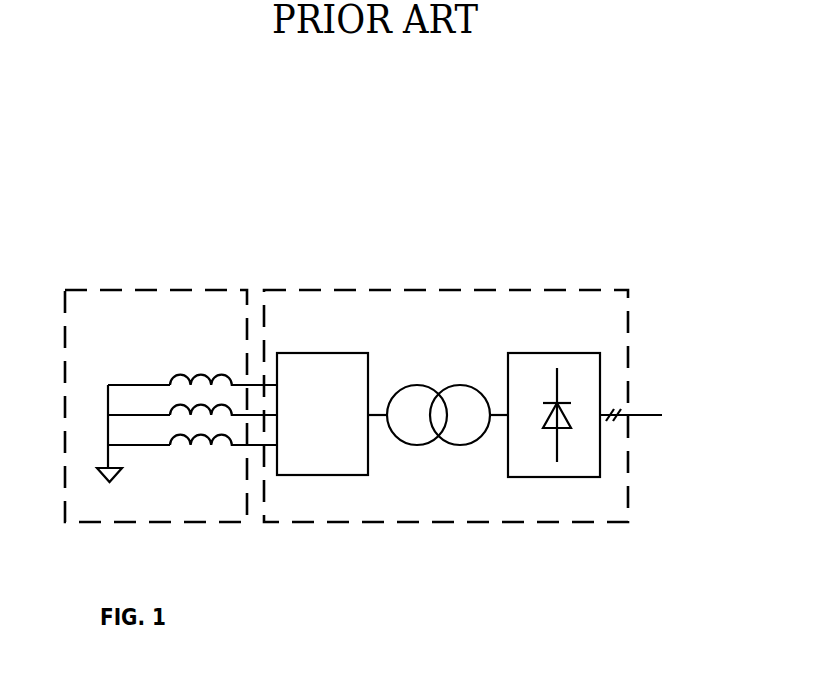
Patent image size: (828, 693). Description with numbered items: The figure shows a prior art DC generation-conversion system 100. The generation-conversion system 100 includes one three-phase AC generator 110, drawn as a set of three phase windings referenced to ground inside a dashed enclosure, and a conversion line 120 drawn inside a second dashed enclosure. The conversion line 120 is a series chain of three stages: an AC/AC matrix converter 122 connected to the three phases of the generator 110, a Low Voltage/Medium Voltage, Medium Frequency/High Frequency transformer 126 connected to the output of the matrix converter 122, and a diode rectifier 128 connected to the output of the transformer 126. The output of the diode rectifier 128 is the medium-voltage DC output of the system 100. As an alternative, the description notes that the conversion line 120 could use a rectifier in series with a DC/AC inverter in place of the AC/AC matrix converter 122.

The generation-conversion system 100 is at (488, 117).
The 3-phase AC generator 110 is at (187, 290).
The conversion line 120 is at (628, 293).
The AC/AC matrix converter 122 is at (307, 353).
The LV/MV, MF/HF transformer 126 is at (422, 385).
The diode rectifier 128 is at (542, 353).